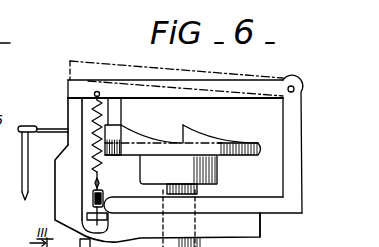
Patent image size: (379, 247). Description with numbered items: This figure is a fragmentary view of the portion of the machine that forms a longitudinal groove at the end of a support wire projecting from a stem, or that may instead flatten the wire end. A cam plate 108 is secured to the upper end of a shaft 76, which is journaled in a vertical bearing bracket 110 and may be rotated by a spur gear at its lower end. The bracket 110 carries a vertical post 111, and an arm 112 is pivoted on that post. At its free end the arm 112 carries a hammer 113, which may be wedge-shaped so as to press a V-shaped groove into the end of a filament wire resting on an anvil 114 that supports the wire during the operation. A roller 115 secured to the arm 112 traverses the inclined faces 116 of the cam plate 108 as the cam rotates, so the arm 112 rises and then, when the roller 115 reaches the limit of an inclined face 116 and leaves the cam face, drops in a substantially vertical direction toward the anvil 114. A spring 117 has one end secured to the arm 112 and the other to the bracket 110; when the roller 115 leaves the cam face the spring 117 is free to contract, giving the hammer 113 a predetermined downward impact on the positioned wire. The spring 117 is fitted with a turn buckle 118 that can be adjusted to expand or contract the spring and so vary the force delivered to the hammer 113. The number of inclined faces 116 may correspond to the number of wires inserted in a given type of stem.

The shaft 76 is at (192, 227).
The cam plate 108 is at (256, 154).
The bearing bracket 110 is at (262, 226).
The vertical post 111 is at (302, 123).
The arm 112 is at (230, 87).
The hammer 113 is at (68, 114).
The anvil 114 is at (58, 194).
The roller 115 is at (137, 131).
The inclined faces 116 is at (208, 132).
The spring 117 is at (100, 171).
The turn buckle 118 is at (94, 202).